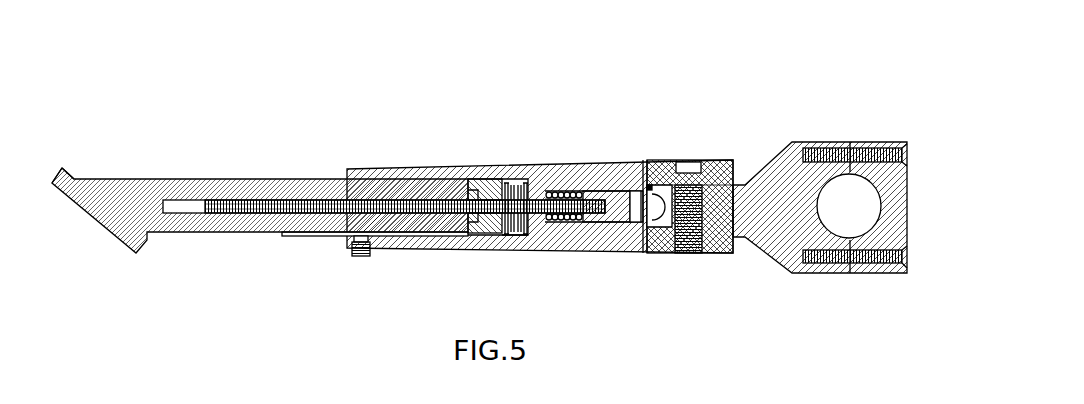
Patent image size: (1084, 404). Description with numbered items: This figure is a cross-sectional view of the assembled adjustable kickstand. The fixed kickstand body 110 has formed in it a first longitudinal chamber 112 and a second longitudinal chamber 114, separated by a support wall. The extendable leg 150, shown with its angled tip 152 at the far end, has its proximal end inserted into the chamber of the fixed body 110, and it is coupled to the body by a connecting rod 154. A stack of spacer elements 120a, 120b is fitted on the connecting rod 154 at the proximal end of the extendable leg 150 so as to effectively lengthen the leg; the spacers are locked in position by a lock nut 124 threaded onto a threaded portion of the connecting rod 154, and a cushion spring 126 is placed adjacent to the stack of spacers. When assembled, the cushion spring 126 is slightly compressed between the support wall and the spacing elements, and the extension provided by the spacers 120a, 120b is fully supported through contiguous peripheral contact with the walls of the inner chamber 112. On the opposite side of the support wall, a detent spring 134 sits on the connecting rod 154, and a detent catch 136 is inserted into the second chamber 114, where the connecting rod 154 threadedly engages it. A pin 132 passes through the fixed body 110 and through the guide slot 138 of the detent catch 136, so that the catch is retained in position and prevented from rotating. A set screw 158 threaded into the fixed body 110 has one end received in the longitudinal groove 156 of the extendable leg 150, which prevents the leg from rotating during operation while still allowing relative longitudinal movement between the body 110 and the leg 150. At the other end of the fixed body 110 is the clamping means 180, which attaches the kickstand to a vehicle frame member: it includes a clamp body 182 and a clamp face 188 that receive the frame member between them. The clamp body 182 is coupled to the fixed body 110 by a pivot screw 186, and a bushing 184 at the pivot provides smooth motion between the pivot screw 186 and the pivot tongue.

The fixed kickstand body 110 is at (565, 253).
The first longitudinal chamber 112 is at (520, 237).
The second longitudinal chamber 114 is at (562, 224).
The spacer element 120a is at (476, 180).
The spacer element 120b is at (490, 234).
The lock nut 124 is at (504, 182).
The cushion spring 126 is at (520, 182).
The pin 132 is at (645, 160).
The detent spring 134 is at (572, 192).
The detent catch 136 is at (610, 224).
The guide slot 138 is at (640, 192).
The extendable leg 150 is at (191, 233).
The blade tip 152 is at (67, 170).
The connecting rod 154 is at (243, 200).
The groove 156 is at (284, 237).
The set screw 158 is at (362, 257).
The clamping means 180 is at (822, 306).
The clamp body 182 is at (797, 143).
The bushing 184 is at (717, 186).
The pivot screw 186 is at (690, 254).
The clamp face 188 is at (874, 143).